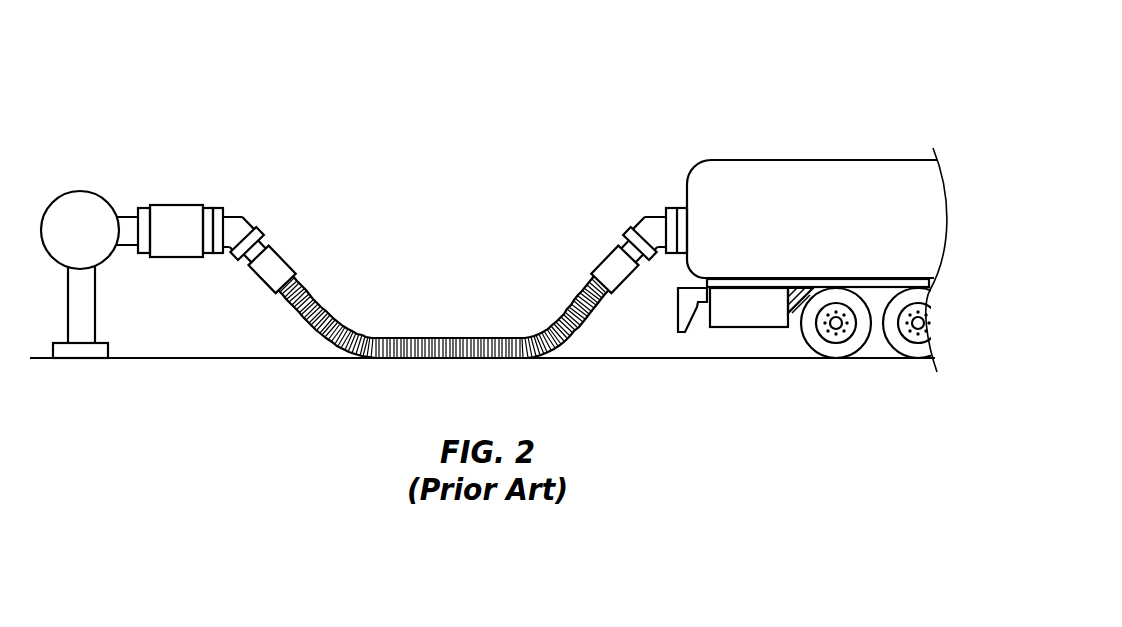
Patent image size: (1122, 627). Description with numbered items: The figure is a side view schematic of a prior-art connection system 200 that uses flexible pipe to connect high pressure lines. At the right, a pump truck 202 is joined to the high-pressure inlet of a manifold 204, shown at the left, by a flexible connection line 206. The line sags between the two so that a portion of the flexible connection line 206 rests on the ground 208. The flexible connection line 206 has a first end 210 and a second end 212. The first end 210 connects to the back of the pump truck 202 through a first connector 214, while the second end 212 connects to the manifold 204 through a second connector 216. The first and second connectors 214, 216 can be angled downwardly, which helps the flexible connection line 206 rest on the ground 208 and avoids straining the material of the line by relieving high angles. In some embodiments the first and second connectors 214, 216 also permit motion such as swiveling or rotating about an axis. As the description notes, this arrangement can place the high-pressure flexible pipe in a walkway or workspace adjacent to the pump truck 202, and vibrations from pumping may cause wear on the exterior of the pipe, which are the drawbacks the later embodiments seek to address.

The connection system 200 is at (233, 68).
The pump truck 202 is at (762, 160).
The manifold 204 is at (82, 190).
The flexible connection line 206 is at (427, 338).
The ground 208 is at (238, 358).
The first end 210 is at (597, 262).
The second end 212 is at (286, 258).
The first connector 214 is at (660, 217).
The second connector 216 is at (233, 215).